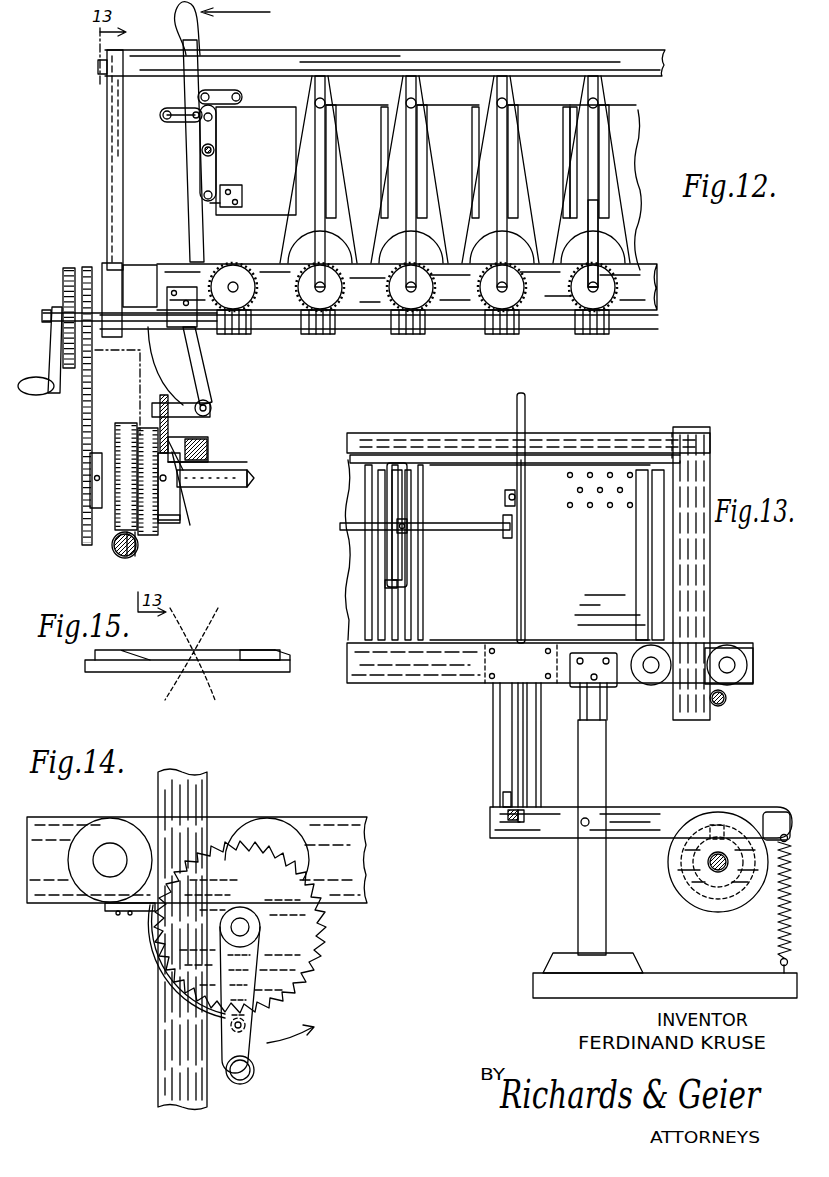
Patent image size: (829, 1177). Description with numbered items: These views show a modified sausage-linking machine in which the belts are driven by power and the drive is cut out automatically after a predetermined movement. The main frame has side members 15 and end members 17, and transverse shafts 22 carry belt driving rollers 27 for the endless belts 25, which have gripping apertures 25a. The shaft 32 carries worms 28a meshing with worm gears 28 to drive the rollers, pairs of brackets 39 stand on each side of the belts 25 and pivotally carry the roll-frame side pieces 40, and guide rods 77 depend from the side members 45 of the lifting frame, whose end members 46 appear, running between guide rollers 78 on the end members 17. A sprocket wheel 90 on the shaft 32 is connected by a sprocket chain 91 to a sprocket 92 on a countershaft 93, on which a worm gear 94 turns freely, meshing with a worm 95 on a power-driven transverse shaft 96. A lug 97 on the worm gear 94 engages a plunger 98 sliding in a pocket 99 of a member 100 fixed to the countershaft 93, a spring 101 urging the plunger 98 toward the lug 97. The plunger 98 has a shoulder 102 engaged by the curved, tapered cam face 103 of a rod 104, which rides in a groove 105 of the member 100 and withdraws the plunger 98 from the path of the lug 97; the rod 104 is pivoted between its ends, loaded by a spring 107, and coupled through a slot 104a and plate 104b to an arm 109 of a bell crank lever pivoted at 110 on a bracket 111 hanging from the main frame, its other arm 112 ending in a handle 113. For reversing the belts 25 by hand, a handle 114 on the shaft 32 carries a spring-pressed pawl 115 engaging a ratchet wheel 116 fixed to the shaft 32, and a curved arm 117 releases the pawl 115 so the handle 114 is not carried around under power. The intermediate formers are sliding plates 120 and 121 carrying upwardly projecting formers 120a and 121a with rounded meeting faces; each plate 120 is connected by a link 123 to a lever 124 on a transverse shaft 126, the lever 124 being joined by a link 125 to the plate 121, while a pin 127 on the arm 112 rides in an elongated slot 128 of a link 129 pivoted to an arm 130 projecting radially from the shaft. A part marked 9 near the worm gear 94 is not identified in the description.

In FIG. 13, the stand base 9 is at (645, 840).
In FIG. 12, the side members 15 is at (571, 308).
In FIG. 13, the end members 17 is at (439, 684).
In FIG. 14, the end members 17 is at (346, 856).
In FIG. 12, the shafts 22 is at (416, 290).
In FIG. 12, the endless belts 25 is at (640, 148).
In FIG. 13, the endless belts 25 is at (655, 548).
In FIG. 13, the apertures 25a is at (596, 512).
In FIG. 12, the driving rollers 27 is at (547, 287).
In FIG. 12, the worm gears 28 is at (331, 324).
In FIG. 12, the worms 28a is at (241, 327).
In FIG. 12, the shaft 32 is at (296, 322).
In FIG. 14, the shaft 32 is at (250, 915).
In FIG. 12, the brackets 39 is at (600, 235).
In FIG. 13, the brackets 39 is at (660, 568).
In FIG. 12, the side pieces 40 is at (604, 98).
In FIG. 12, the side members 45 is at (566, 50).
In FIG. 13, the side members 45 is at (712, 446).
In FIG. 13, the end members 46 is at (612, 437).
In FIG. 13, the guide rods 77 is at (701, 605).
In FIG. 14, the guide rods 77 is at (209, 795).
In FIG. 13, the guide rollers 78 is at (738, 652).
In FIG. 14, the guide rollers 78 is at (280, 820).
In FIG. 12, the sprocket wheel 90 is at (85, 266).
In FIG. 12, the sprocket chain 91 is at (82, 408).
In FIG. 12, the sprocket 92 is at (90, 485).
In FIG. 12, the countershaft 93 is at (252, 482).
In FIG. 13, the countershaft 93 is at (708, 860).
In FIG. 12, the worm gear 94 is at (117, 543).
In FIG. 12, the worm 95 is at (135, 558).
In FIG. 12, the transverse shaft 96 is at (128, 560).
In FIG. 12, the lug 97 is at (121, 468).
In FIG. 12, the plunger 98 is at (177, 480).
In FIG. 13, the plunger 98 is at (726, 818).
In FIG. 12, the pocket 99 is at (210, 448).
In FIG. 12, the member 100 is at (150, 536).
In FIG. 12, the spring 101 is at (210, 460).
In FIG. 12, the shoulder 102 is at (180, 438).
In FIG. 12, the cam face 103 is at (178, 465).
In FIG. 13, the cam face 103 is at (714, 824).
In FIG. 12, the rod 104 is at (152, 410).
In FIG. 13, the rod 104 is at (650, 807).
In FIG. 13, the slot 104a is at (527, 822).
In FIG. 13, the plate 104b is at (500, 805).
In FIG. 12, the groove 105 is at (166, 524).
In FIG. 13, the groove 105 is at (583, 818).
In FIG. 13, the spring 107 is at (778, 912).
In FIG. 12, the arm 109 is at (176, 389).
In FIG. 13, the arm 109 is at (508, 815).
In FIG. 12, the pivot 110 is at (210, 401).
In FIG. 12, the bracket 111 is at (181, 350).
In FIG. 12, the arm 112 is at (190, 218).
In FIG. 13, the arm 112 is at (526, 555).
In FIG. 12, the handle 113 is at (193, 27).
In FIG. 13, the handle 113 is at (527, 410).
In FIG. 12, the handle 114 is at (50, 352).
In FIG. 14, the handle 114 is at (250, 976).
In FIG. 14, the pawl 115 is at (250, 1020).
In FIG. 14, the ratchet wheel 116 is at (316, 945).
In FIG. 14, the curved arm 117 is at (150, 970).
In FIG. 12, the plate 120 is at (285, 104).
In FIG. 15, the plate 120 is at (282, 660).
In FIG. 13, the plate 120 is at (385, 562).
In FIG. 12, the formers 120a is at (393, 118).
In FIG. 15, the formers 120a is at (248, 645).
In FIG. 12, the plate 121 is at (256, 161).
In FIG. 15, the plate 121 is at (110, 672).
In FIG. 13, the plate 121 is at (398, 635).
In FIG. 12, the formers 121a is at (357, 106).
In FIG. 15, the formers 121a is at (158, 649).
In FIG. 12, the link 123 is at (240, 93).
In FIG. 13, the link 123 is at (388, 470).
In FIG. 12, the lever 124 is at (205, 168).
In FIG. 13, the lever 124 is at (402, 495).
In FIG. 12, the link 125 is at (222, 207).
In FIG. 13, the link 125 is at (398, 590).
In FIG. 12, the transverse shaft 126 is at (202, 150).
In FIG. 13, the transverse shaft 126 is at (478, 530).
In FIG. 12, the pin 127 is at (194, 111).
In FIG. 12, the elongated slot 128 is at (160, 115).
In FIG. 12, the link 129 is at (163, 110).
In FIG. 13, the link 129 is at (516, 497).
In FIG. 13, the arm 130 is at (505, 508).